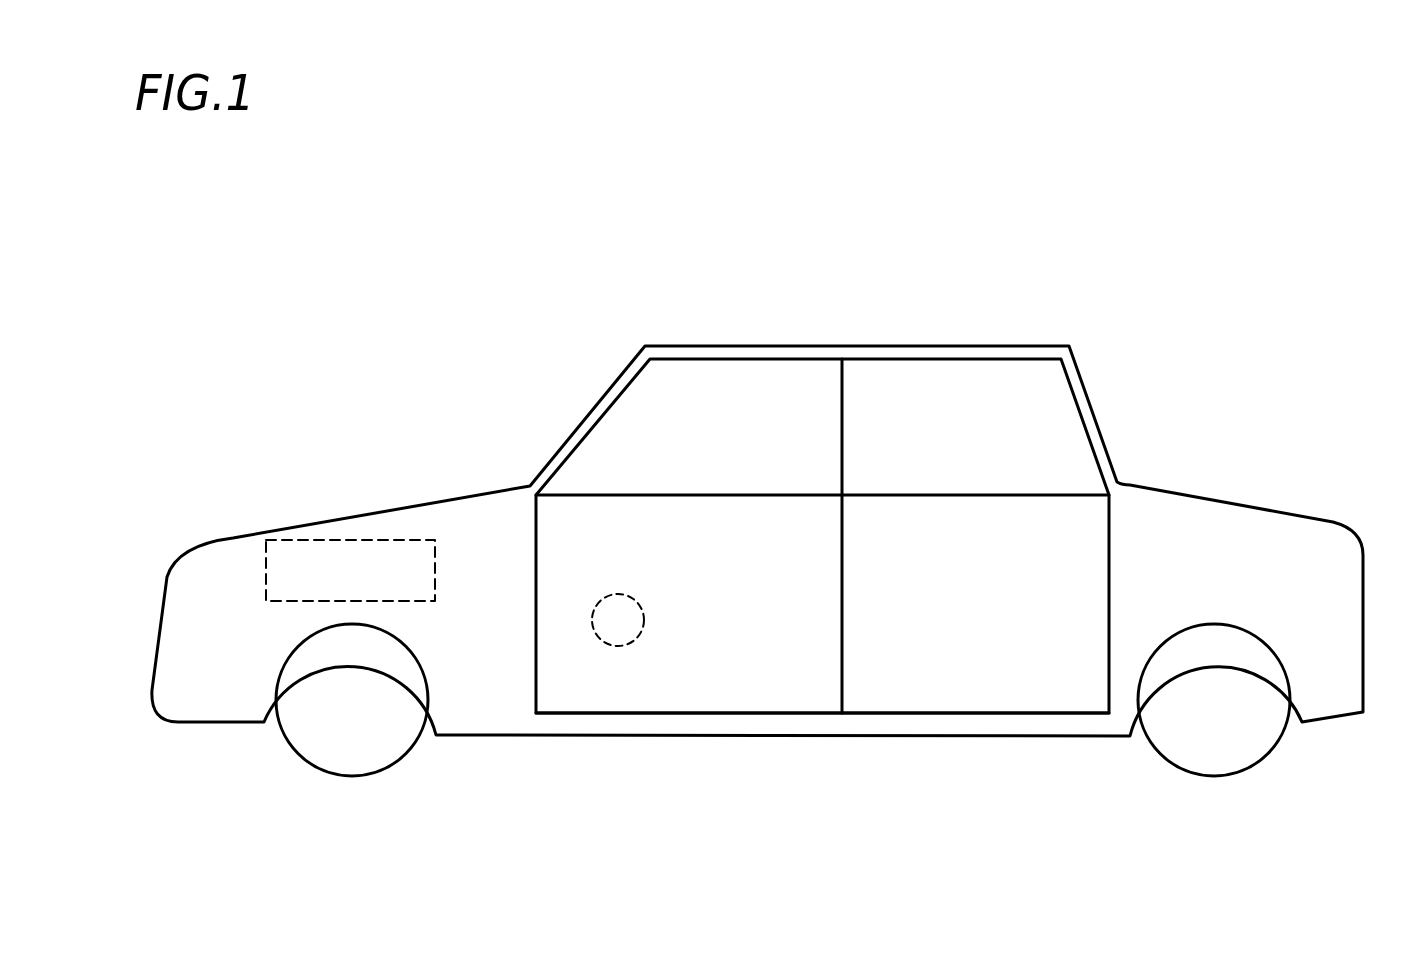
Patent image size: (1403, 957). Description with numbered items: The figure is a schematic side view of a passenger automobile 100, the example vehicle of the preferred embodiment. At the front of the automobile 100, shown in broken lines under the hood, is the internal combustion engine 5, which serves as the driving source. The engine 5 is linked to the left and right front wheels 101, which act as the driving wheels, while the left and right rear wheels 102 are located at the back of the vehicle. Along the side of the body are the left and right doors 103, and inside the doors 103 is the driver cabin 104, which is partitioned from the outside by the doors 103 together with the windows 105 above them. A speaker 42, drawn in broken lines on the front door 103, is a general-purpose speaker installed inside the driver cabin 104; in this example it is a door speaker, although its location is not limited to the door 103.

The automobile 100 is at (495, 330).
The internal combustion engine 5 is at (323, 540).
The speaker 42 is at (618, 646).
The front wheel 101 is at (300, 757).
The rear wheel 102 is at (1265, 755).
The door 103 is at (760, 663).
The driver cabin 104 is at (689, 415).
The window 105 is at (763, 400).